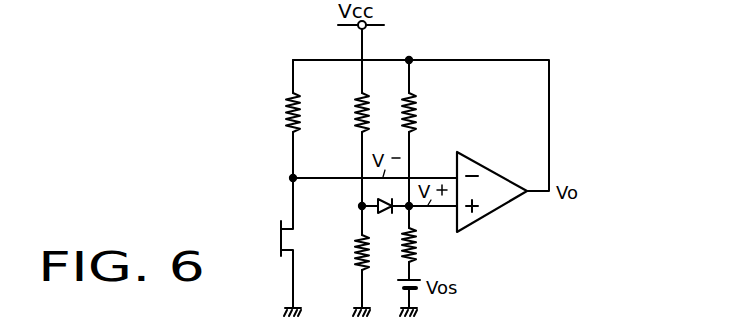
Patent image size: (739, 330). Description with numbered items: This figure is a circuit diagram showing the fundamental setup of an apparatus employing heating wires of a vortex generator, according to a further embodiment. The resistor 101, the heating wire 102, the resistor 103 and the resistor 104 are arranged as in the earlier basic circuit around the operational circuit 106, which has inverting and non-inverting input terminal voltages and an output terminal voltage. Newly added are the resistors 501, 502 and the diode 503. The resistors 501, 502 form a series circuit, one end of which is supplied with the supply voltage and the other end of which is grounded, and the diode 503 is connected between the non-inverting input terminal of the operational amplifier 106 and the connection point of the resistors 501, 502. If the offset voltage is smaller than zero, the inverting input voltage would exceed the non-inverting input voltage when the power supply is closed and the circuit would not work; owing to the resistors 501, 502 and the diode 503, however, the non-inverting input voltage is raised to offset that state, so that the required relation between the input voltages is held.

The resistor 101 is at (286, 119).
The heating wire 102 is at (278, 246).
The resistor 103 is at (420, 100).
The resistor 104 is at (418, 262).
The operational circuit 106 is at (503, 205).
The resistor 501 is at (357, 108).
The resistor 502 is at (356, 265).
The diode 503 is at (363, 205).